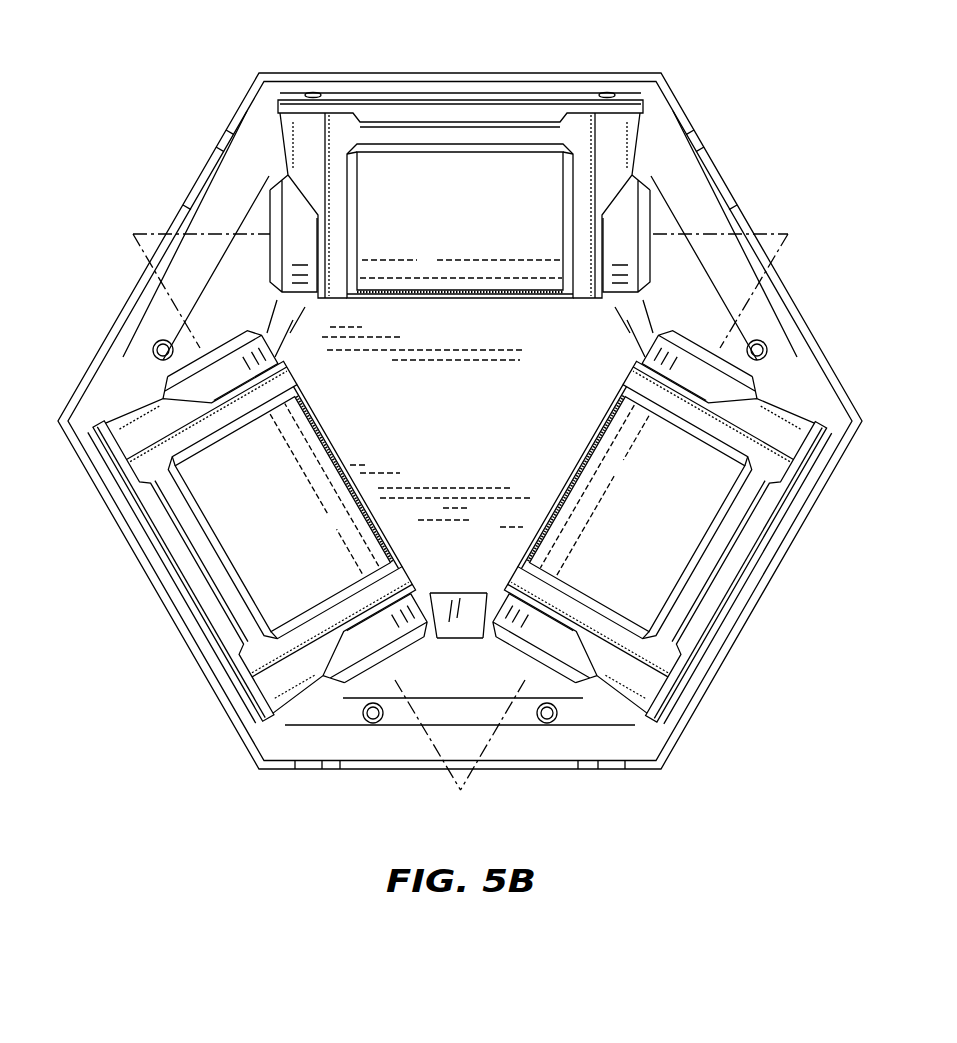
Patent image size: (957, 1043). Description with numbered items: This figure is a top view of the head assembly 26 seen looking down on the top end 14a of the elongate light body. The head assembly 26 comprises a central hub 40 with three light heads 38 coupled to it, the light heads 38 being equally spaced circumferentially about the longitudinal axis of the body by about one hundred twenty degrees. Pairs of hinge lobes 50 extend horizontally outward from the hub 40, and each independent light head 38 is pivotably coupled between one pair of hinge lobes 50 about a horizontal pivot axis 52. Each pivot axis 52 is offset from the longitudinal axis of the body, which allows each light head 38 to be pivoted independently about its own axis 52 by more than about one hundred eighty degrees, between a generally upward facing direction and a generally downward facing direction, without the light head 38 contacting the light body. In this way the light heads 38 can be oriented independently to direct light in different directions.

The head assembly 26 is at (126, 130).
The top end 14a is at (578, 345).
The light head 38 is at (467, 137).
The hub 40 is at (403, 385).
The hinge lobe 50 is at (288, 213).
The pivot axis 52 is at (183, 208).